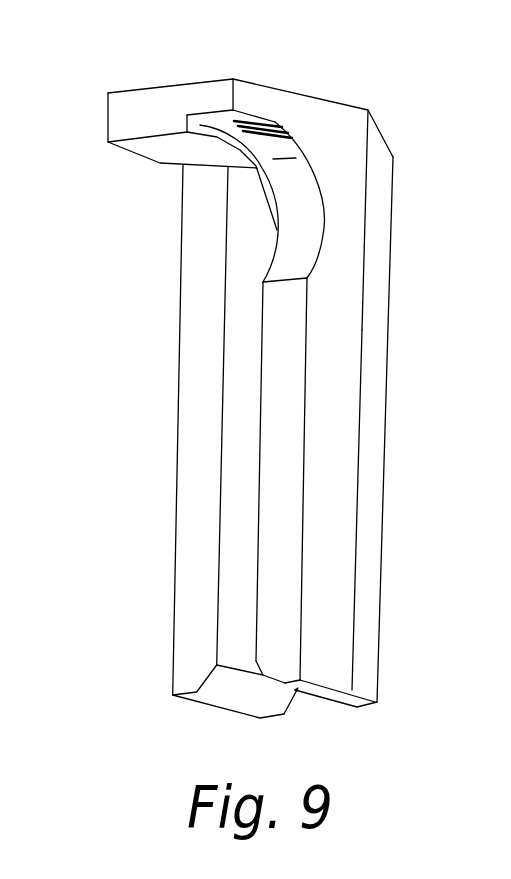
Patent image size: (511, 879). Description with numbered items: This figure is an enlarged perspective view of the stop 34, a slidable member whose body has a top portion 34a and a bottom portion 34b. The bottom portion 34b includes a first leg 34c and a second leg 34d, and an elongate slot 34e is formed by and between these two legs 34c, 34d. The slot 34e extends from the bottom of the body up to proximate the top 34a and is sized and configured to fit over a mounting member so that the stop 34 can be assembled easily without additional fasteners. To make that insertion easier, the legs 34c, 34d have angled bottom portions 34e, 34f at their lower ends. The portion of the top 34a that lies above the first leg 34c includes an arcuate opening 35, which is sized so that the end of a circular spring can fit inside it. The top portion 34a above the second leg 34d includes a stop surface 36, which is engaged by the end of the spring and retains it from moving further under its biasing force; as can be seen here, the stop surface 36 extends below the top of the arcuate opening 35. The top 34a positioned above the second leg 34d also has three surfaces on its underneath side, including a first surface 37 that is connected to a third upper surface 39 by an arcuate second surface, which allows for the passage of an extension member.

The stop 34 is at (122, 191).
The top portion 34a is at (350, 150).
The bottom portion 34b is at (332, 515).
The first leg 34c is at (338, 357).
The second leg 34d is at (188, 385).
The slot 34e is at (258, 675).
The angled bottom portion 34f is at (225, 685).
The arcuate opening 35 is at (288, 232).
The stop surface 36 is at (200, 125).
The first surface 37 is at (205, 165).
The third upper surface 39 is at (140, 152).